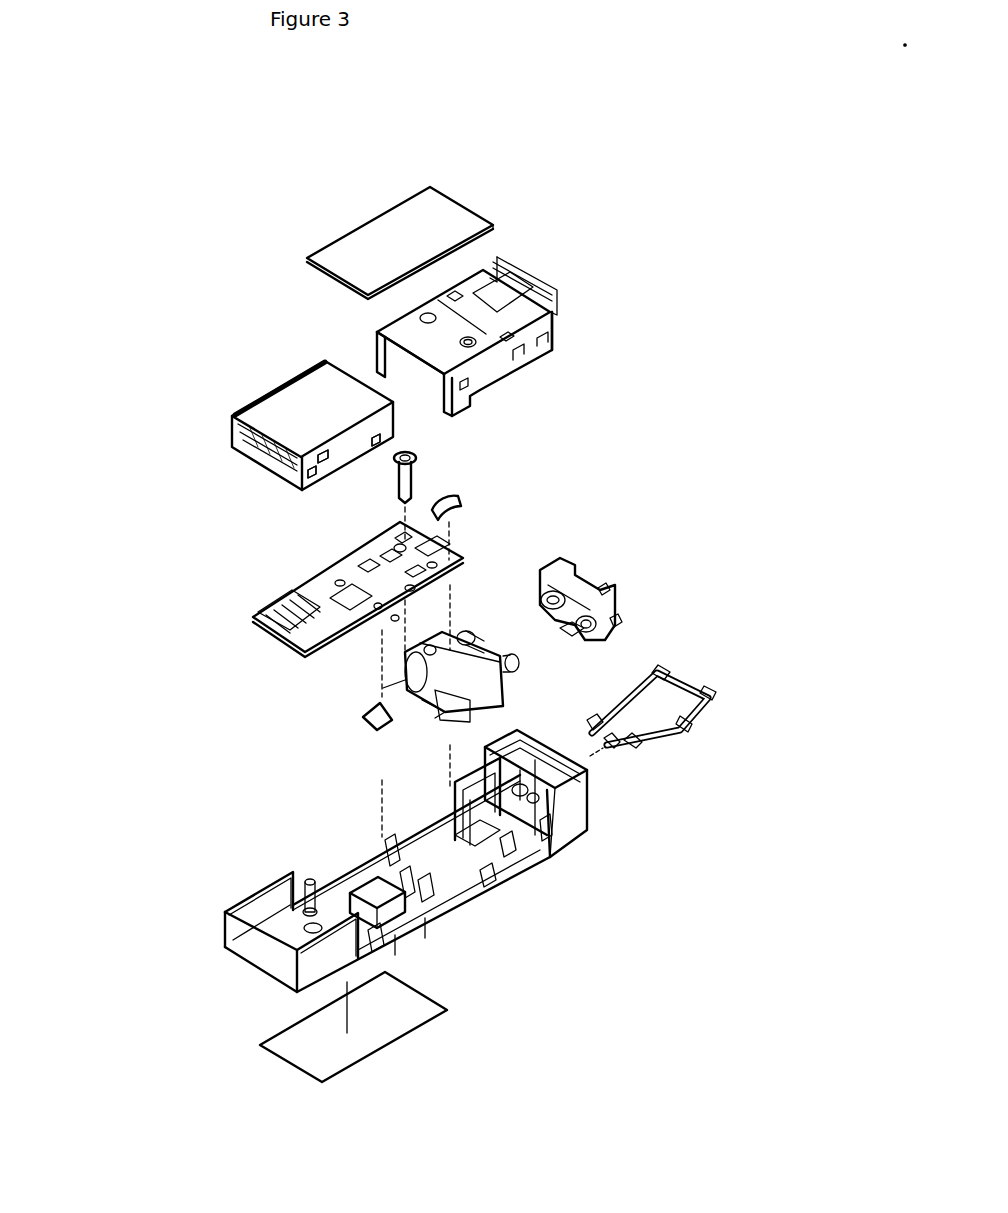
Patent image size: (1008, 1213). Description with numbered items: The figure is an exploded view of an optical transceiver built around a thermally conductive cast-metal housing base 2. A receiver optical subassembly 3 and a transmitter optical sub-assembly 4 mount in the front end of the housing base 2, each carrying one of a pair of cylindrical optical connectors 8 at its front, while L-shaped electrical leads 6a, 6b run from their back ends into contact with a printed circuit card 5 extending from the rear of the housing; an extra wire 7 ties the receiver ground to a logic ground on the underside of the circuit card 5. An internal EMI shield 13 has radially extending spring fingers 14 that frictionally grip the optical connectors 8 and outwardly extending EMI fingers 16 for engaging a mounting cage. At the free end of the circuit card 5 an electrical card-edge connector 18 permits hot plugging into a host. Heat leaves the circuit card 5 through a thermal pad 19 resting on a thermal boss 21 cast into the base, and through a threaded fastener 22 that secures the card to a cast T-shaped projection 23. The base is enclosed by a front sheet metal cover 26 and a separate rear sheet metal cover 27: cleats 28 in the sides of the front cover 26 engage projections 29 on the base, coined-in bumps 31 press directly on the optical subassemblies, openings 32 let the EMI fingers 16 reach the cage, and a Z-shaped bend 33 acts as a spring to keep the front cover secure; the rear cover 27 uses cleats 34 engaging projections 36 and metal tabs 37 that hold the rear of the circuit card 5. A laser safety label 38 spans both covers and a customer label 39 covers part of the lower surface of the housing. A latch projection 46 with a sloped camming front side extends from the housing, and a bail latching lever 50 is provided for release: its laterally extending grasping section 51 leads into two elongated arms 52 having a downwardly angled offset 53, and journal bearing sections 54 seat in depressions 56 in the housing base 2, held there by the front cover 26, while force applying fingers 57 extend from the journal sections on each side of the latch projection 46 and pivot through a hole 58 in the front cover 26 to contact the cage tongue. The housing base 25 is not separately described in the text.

The housing base 2 is at (590, 822).
The receiver optical subassembly (ROSA) 3 is at (377, 742).
The transmitter optical sub-assembly (TOSA) 4 is at (383, 672).
The printed circuit card 5 is at (290, 582).
The electrical lead 6a is at (435, 718).
The electrical lead 6b is at (383, 692).
The extra wire 7 is at (457, 503).
The cylindrical optical connectors 8 is at (471, 625).
The internal EMI shield 13 is at (568, 588).
The spring fingers 14 is at (565, 670).
The EMI fingers 16 is at (643, 589).
The electrical card-edge connector 18 is at (250, 613).
The thermal pad 19 is at (363, 723).
The thermal boss 21 is at (370, 880).
The threaded fastener 22 is at (417, 477).
The T-shaped projection 23 is at (392, 848).
The housing base 25 is at (277, 976).
The front sheet metal cover 26 is at (373, 340).
The rear sheet metal cover 27 is at (248, 398).
The cleats 28 is at (518, 370).
The projections 29 is at (518, 881).
The coined-in bumps 31 is at (462, 342).
The openings 32 is at (548, 318).
The Z-shaped bend 33 is at (555, 273).
The cleats 34 is at (344, 477).
The projections 36 is at (421, 935).
The metal tabs 37 is at (303, 458).
The laser safety label 38 is at (465, 197).
The customer label 39 is at (420, 1030).
The latch projection 46 is at (445, 787).
The bail latching lever 50 is at (715, 692).
The grasping section 51 is at (685, 687).
The elongated arms 52 is at (673, 737).
The downwardly angled offset 53 is at (692, 720).
The journal bearing sections 54 is at (633, 752).
The depressions 56 is at (547, 832).
The force applying fingers 57 is at (618, 752).
The hole 58 is at (505, 310).